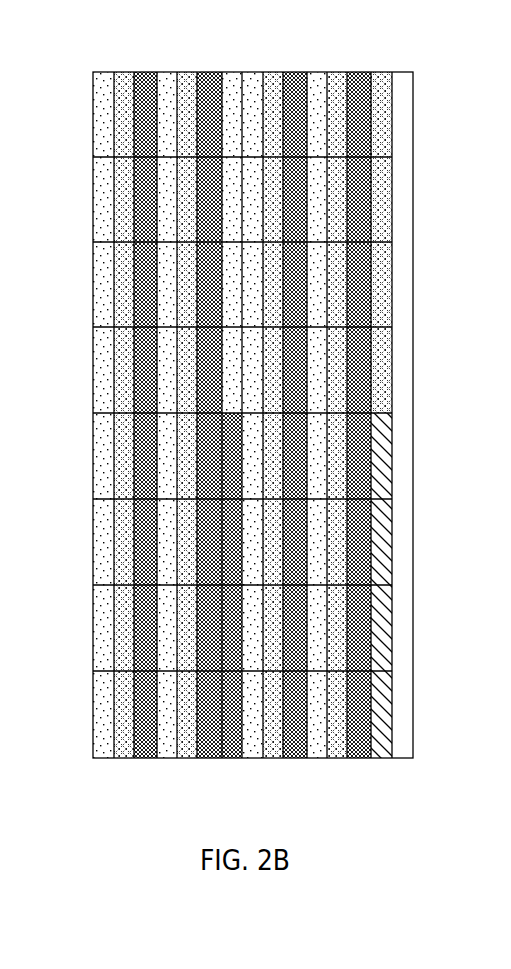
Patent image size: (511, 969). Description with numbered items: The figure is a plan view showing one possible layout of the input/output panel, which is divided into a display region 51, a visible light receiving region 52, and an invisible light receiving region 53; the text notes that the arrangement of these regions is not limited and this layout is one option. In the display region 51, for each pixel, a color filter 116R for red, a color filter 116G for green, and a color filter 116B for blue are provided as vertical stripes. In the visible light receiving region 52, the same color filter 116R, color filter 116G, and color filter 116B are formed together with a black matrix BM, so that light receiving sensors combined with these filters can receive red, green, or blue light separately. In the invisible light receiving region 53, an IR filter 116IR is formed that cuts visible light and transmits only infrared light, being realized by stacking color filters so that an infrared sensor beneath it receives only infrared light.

The display region 51 is at (222, 66).
The visible light receiving region 52 is at (242, 66).
The invisible light receiving region 53 is at (413, 66).
The color filter for red 116R is at (393, 161).
The color filter for green 116G is at (243, 118).
The color filter for blue 116B is at (148, 760).
The IR filter 116IR is at (407, 413).
The black matrix BM is at (385, 760).